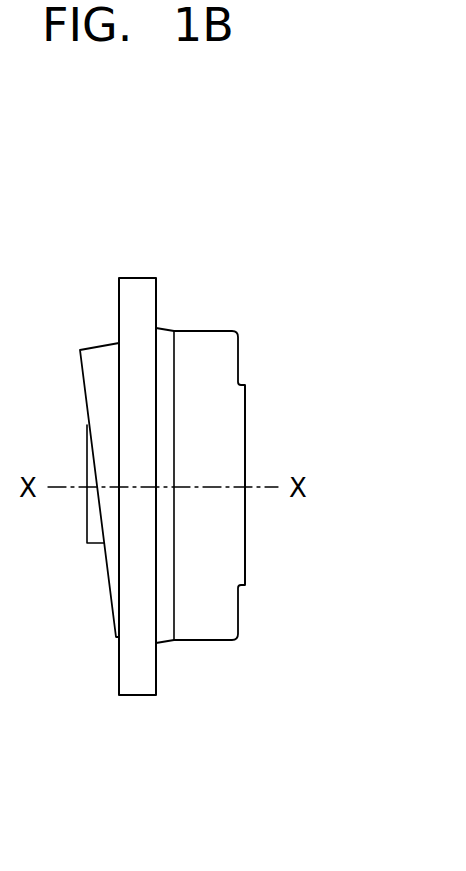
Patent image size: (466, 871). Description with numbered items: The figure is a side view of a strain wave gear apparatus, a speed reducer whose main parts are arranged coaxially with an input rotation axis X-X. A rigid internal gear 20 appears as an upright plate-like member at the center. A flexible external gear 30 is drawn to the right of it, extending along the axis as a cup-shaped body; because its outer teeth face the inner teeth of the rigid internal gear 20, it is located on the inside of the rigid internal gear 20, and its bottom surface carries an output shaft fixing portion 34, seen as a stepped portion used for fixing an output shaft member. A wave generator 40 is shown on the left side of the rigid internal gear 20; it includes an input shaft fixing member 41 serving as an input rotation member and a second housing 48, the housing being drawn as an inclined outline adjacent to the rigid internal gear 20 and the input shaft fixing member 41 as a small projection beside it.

The rigid internal gear 20 is at (143, 287).
The flexible external gear 30 is at (214, 350).
The output shaft fixing portion 34 is at (246, 411).
The wave generator 40 is at (65, 463).
The input shaft fixing member 41 is at (88, 536).
The second housing 48 is at (90, 352).